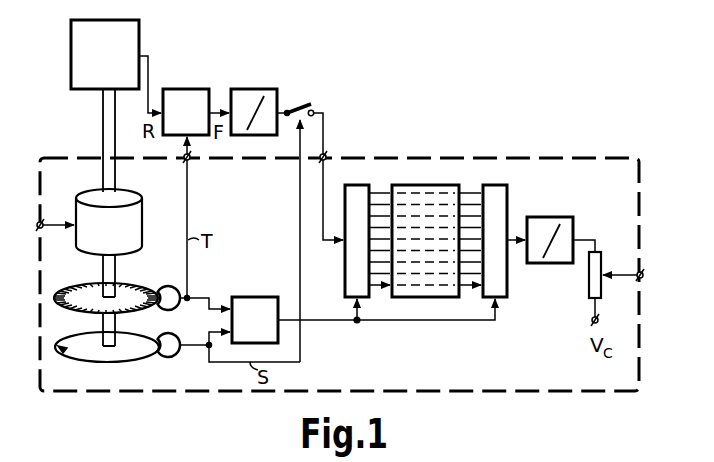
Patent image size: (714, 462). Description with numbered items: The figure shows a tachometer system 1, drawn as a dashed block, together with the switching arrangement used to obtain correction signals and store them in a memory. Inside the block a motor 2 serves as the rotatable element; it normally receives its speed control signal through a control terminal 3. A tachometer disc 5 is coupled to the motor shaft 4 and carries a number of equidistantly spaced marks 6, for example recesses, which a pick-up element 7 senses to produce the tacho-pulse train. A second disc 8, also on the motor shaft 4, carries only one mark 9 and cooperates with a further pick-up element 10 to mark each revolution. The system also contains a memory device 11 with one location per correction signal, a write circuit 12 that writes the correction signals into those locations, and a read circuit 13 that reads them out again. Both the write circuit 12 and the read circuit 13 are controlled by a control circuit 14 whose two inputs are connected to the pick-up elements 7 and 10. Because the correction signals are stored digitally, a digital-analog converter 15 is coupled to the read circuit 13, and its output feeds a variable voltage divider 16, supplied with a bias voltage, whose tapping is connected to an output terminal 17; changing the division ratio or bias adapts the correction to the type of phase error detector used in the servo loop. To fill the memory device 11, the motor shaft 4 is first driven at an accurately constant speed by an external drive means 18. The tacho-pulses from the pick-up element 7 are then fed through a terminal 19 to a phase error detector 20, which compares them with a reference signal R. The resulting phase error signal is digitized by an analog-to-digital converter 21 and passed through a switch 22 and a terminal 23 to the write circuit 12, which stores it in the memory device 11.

The tachometer system 1 is at (480, 157).
The motor 2 is at (144, 206).
The control terminal 3 is at (44, 219).
The motor shaft 4 is at (116, 270).
The tachometer disc 5 is at (68, 310).
The marks 6 is at (68, 287).
The pick-up element 7 is at (165, 286).
The second disc 8 is at (111, 355).
The mark 9 is at (64, 354).
The pick-up element 10 is at (172, 356).
The memory device 11 is at (418, 297).
The write circuit 12 is at (345, 290).
The read circuit 13 is at (503, 297).
The control circuit 14 is at (250, 297).
The digital-analog converter 15 is at (546, 217).
The variable voltage divider 16 is at (589, 282).
The output terminal 17 is at (643, 279).
The external drive means 18 is at (140, 30).
The terminal 19 is at (202, 219).
The phase error detector 20 is at (178, 89).
The analog-to-digital converter 21 is at (255, 89).
The switch 22 is at (302, 106).
The terminal 23 is at (327, 152).